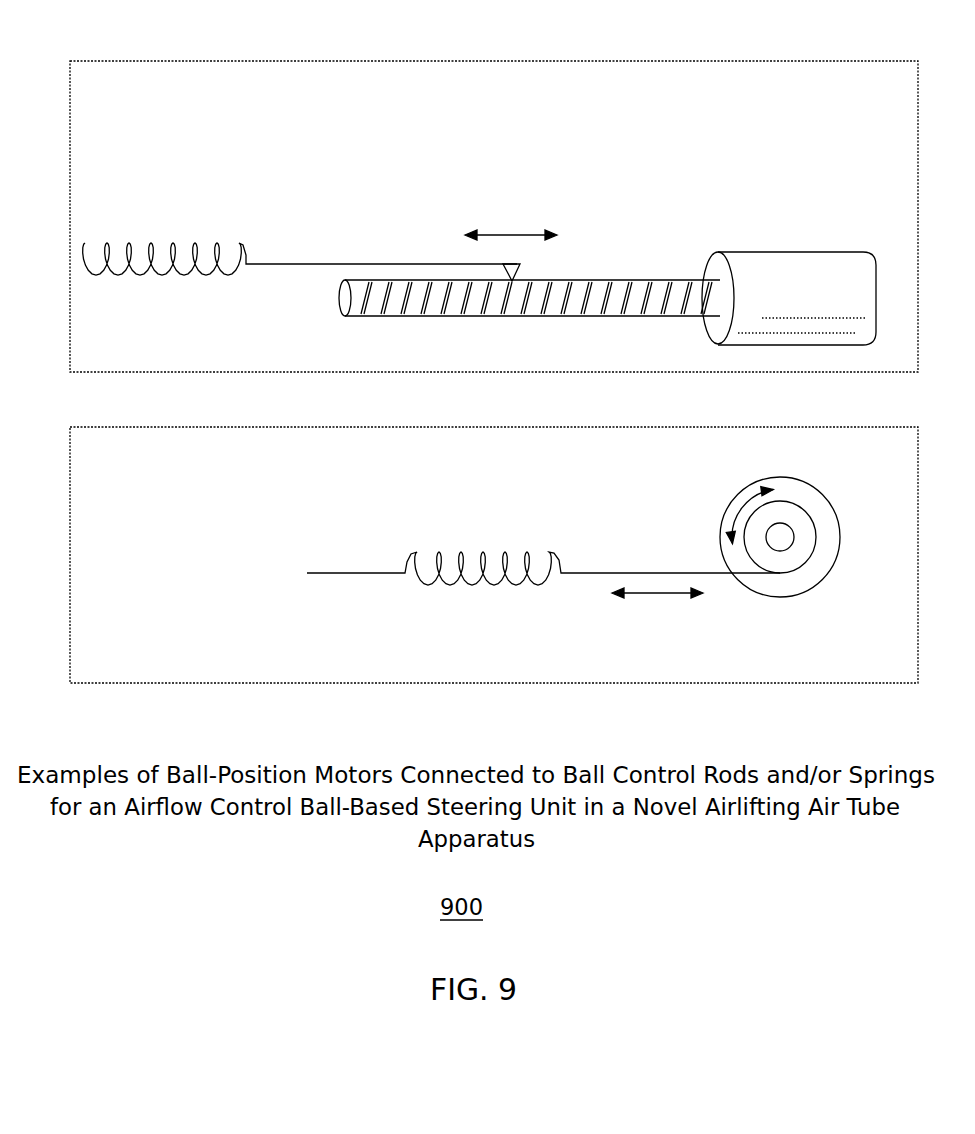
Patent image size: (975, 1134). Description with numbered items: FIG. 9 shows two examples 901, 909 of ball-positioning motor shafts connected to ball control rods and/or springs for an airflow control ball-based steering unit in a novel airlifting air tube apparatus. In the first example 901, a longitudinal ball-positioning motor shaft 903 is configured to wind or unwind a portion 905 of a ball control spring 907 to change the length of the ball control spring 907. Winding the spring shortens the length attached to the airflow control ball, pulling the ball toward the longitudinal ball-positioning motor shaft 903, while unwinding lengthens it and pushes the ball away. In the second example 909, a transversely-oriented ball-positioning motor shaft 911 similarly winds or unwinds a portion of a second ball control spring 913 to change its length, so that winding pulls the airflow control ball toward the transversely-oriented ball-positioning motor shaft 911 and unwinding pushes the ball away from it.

The first example 901 is at (105, 61).
The longitudinal ball-positioning motor shaft 903 is at (789, 298).
The portion of ball control spring 905 is at (586, 262).
The ball control spring 907 is at (254, 226).
The second example 909 is at (107, 427).
The transversely-oriented ball-positioning motor shaft 911 is at (818, 605).
The second ball control spring 913 is at (554, 535).